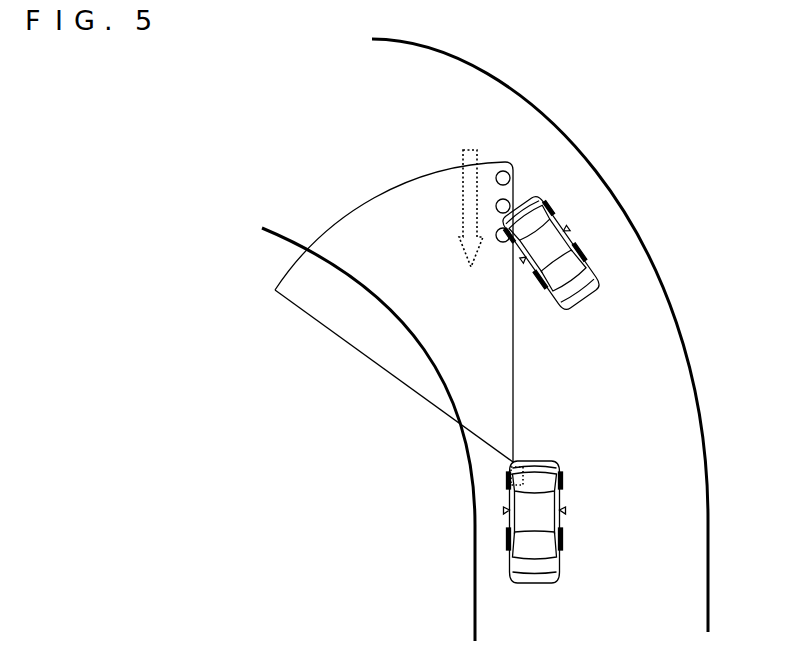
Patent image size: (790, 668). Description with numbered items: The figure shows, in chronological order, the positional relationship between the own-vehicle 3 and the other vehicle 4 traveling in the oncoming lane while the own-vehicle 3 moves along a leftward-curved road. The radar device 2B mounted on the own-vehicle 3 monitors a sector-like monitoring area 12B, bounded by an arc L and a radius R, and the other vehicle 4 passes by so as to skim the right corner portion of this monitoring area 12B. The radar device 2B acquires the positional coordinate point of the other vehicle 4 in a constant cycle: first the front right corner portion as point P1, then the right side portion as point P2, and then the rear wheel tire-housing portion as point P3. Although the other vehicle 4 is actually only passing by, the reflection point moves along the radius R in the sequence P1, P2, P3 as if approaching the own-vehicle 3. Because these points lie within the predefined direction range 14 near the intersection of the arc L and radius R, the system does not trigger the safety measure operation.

The predefined direction range 14 is at (505, 152).
The other vehicle 4 is at (553, 208).
The radius R is at (515, 381).
The arc L is at (330, 227).
The monitoring area 12B is at (363, 325).
The radar device 2B is at (513, 484).
The own-vehicle 3 is at (508, 544).